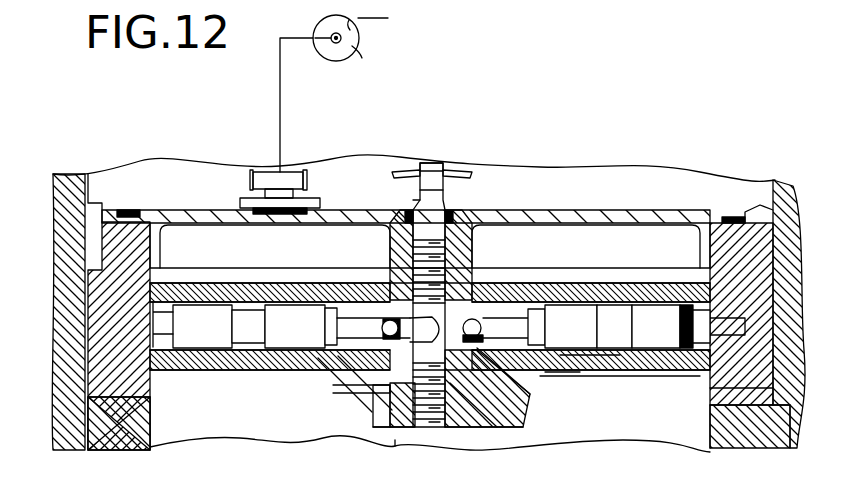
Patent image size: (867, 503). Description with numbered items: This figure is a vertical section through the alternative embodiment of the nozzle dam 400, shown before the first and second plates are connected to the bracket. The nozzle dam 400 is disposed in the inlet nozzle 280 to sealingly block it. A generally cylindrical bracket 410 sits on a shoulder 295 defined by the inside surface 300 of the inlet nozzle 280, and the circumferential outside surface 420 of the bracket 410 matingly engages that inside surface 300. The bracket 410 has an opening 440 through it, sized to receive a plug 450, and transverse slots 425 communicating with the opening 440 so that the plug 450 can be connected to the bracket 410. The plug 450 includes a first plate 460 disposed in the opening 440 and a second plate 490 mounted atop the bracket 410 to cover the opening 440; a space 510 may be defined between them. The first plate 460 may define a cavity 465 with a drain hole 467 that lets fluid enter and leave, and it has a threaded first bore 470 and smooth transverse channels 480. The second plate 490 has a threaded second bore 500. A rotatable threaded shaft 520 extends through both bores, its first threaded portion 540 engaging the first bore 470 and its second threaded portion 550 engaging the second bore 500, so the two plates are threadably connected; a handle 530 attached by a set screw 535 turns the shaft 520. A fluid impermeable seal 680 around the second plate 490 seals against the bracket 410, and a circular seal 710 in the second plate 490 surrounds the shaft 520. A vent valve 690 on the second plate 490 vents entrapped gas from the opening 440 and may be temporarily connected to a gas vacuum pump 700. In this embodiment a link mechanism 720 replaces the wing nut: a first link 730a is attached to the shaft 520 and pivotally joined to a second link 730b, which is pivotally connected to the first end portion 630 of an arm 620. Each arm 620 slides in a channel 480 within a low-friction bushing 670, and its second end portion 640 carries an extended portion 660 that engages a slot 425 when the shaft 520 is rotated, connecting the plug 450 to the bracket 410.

The inlet nozzle 280 is at (97, 432).
The shoulder 295 is at (767, 446).
The inside surface 300 is at (84, 266).
The nozzle dam 400 is at (622, 156).
The bracket 410 is at (723, 248).
The outside surface 420 is at (780, 249).
The transverse slots 425 is at (780, 340).
The opening 440 is at (773, 390).
The plug 450 is at (719, 194).
The first plate 460 is at (243, 363).
The cavity 465 is at (340, 368).
The drain hole 467 is at (372, 412).
The first bore 470 is at (420, 413).
The channels 480 is at (600, 362).
The second plate 490 is at (654, 214).
The second bore 500 is at (405, 262).
The space 510 is at (227, 237).
The shaft 520 is at (441, 204).
The handle 530 is at (462, 172).
The set screw 535 is at (431, 165).
The first threaded portion 540 is at (437, 428).
The second threaded portion 550 is at (400, 247).
The arm 620 is at (643, 313).
The first end portion 630 is at (512, 377).
The second end portion 640 is at (642, 343).
The extended portion 660 is at (683, 360).
The bushing 670 is at (567, 372).
The seal 680 is at (127, 210).
The vent valve 690 is at (265, 168).
The gas vacuum pump 700 is at (352, 55).
The circular seal 710 is at (416, 200).
The link mechanism 720 is at (480, 312).
The first link 730a is at (408, 314).
The second link 730b is at (396, 343).